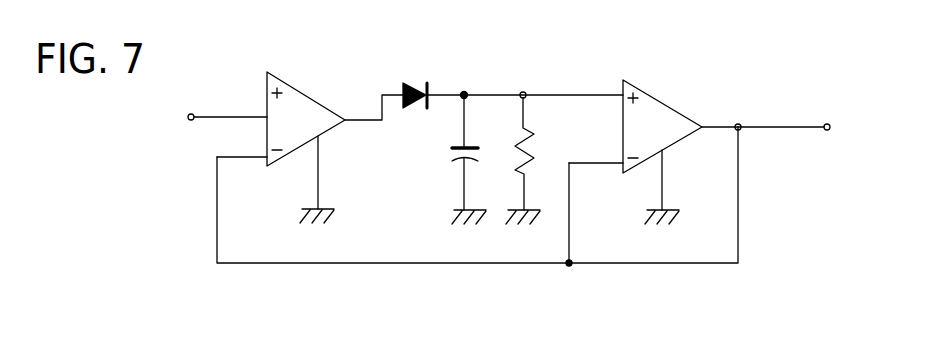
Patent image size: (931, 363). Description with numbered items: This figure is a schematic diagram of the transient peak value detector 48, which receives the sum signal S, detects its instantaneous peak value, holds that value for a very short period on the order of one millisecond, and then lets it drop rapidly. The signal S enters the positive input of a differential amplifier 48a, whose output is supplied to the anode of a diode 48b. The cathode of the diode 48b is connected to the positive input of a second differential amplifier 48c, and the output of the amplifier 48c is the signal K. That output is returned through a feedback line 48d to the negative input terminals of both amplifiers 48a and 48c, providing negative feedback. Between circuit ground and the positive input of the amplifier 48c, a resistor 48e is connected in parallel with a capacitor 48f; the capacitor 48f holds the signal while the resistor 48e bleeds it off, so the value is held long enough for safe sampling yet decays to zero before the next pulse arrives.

The transient peak value detector 48 is at (527, 52).
The differential amplifier 48a is at (300, 117).
The diode 48b is at (428, 86).
The second differential amplifier 48c is at (680, 112).
The feedback line 48d is at (552, 264).
The resistor 48e is at (455, 149).
The capacitor 48f is at (528, 131).